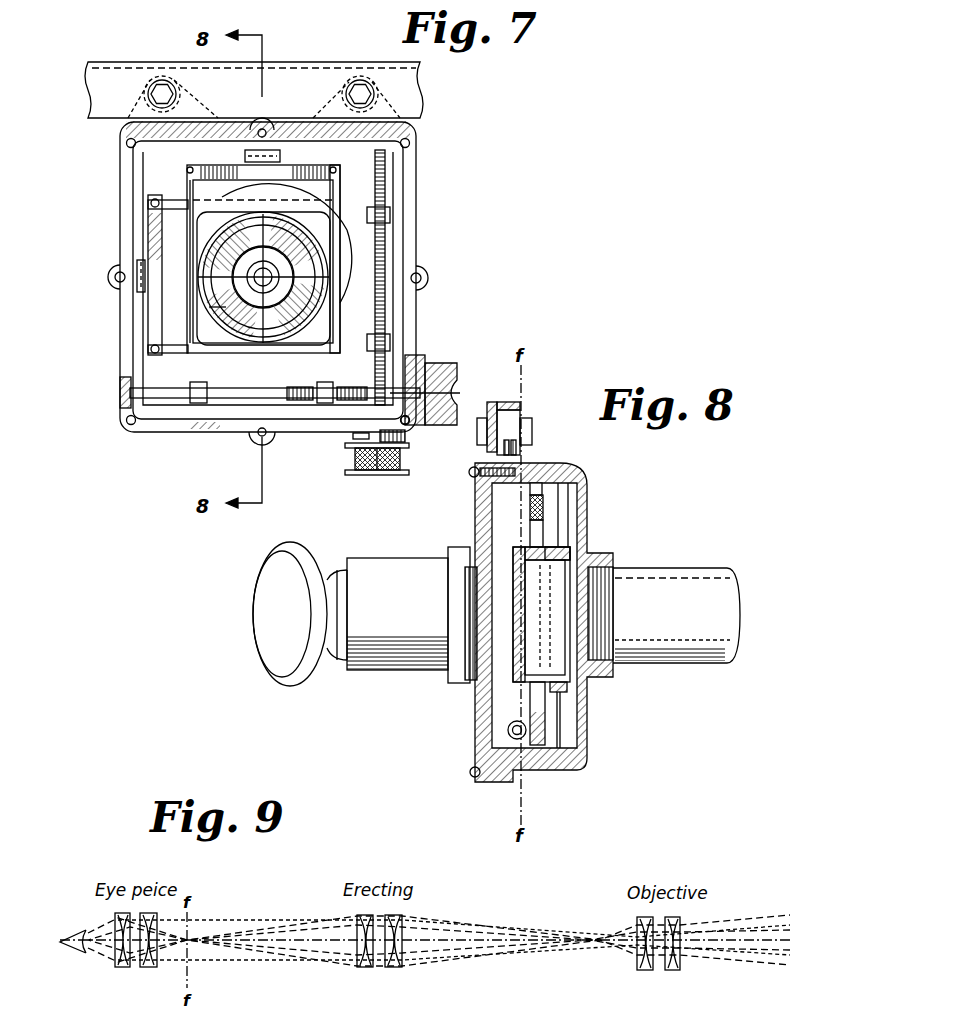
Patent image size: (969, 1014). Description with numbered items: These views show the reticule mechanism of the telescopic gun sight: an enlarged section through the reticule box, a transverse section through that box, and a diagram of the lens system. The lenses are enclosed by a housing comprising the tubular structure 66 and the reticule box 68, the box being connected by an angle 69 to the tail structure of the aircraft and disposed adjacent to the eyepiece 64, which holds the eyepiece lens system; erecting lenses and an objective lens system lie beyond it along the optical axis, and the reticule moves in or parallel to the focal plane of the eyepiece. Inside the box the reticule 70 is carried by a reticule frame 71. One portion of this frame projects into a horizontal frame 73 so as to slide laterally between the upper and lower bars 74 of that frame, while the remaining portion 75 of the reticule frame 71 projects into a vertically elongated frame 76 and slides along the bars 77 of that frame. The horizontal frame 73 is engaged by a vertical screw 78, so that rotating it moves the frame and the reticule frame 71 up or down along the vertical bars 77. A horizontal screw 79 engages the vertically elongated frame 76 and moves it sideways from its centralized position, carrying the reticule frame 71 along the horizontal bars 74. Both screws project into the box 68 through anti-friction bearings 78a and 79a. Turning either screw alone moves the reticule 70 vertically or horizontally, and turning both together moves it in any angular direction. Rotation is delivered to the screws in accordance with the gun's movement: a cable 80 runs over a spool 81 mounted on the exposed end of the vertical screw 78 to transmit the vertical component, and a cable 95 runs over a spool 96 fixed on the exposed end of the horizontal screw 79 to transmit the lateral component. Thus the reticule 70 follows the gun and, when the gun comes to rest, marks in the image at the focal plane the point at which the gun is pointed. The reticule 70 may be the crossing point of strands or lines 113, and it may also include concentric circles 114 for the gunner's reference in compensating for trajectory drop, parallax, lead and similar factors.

In FIG. 8, the eyepiece 64 is at (397, 645).
In FIG. 8, the tubular structure 66 is at (705, 573).
In FIG. 7, the reticule box 68 is at (118, 184).
In FIG. 8, the reticule box 68 is at (587, 473).
In FIG. 7, the angle 69 is at (412, 92).
In FIG. 8, the angle 69 is at (510, 403).
In FIG. 7, the reticule 70 is at (273, 265).
In FIG. 8, the reticule 70 is at (520, 562).
In FIG. 7, the reticule frame 71 is at (200, 325).
In FIG. 8, the reticule frame 71 is at (570, 560).
In FIG. 7, the horizontal frame 73 is at (155, 307).
In FIG. 8, the horizontal frame 73 is at (563, 535).
In FIG. 7, the upper and lower bars 74 is at (171, 203).
In FIG. 8, the upper and lower bars 74 is at (560, 540).
In FIG. 8, the remaining portion of reticule frame 75 is at (540, 543).
In FIG. 7, the vertically elongated frame 76 is at (290, 163).
In FIG. 8, the vertically elongated frame 76 is at (548, 523).
In FIG. 7, the bars 77 is at (188, 248).
In FIG. 7, the vertical screw 78 is at (382, 310).
In FIG. 7, the anti-friction bearing 78a is at (353, 436).
In FIG. 7, the horizontal screw 79 is at (300, 400).
In FIG. 8, the horizontal screw 79 is at (509, 732).
In FIG. 7, the anti-friction bearing 79a is at (418, 358).
In FIG. 7, the cable 80 is at (407, 458).
In FIG. 7, the spool 81 is at (380, 477).
In FIG. 7, the cable 95 is at (443, 365).
In FIG. 7, the spool 96 is at (453, 383).
In FIG. 7, the strands or lines 113 is at (252, 262).
In FIG. 7, the concentric circles 114 is at (272, 272).